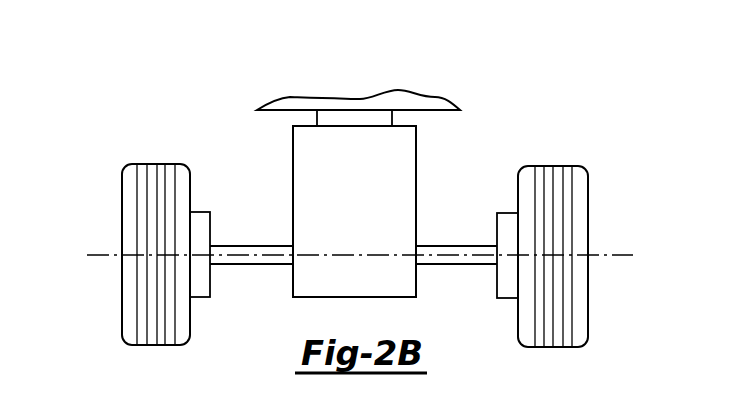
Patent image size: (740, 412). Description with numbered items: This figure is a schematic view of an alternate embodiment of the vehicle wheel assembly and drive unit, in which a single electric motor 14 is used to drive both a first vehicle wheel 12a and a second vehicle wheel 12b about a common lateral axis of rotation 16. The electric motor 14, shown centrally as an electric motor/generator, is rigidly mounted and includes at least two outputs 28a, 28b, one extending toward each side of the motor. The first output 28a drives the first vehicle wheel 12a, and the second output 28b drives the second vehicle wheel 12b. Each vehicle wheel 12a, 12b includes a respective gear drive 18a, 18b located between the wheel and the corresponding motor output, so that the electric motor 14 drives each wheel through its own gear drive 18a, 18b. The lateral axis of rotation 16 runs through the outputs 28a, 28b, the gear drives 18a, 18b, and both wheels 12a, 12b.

The first vehicle wheel 12a is at (147, 164).
The second vehicle wheel 12b is at (555, 166).
The electric motor 14 is at (357, 124).
The lateral axis of rotation 16 is at (97, 250).
The gear drive 18a is at (195, 297).
The gear drive 18b is at (507, 298).
The output 28a is at (252, 246).
The output 28b is at (459, 246).